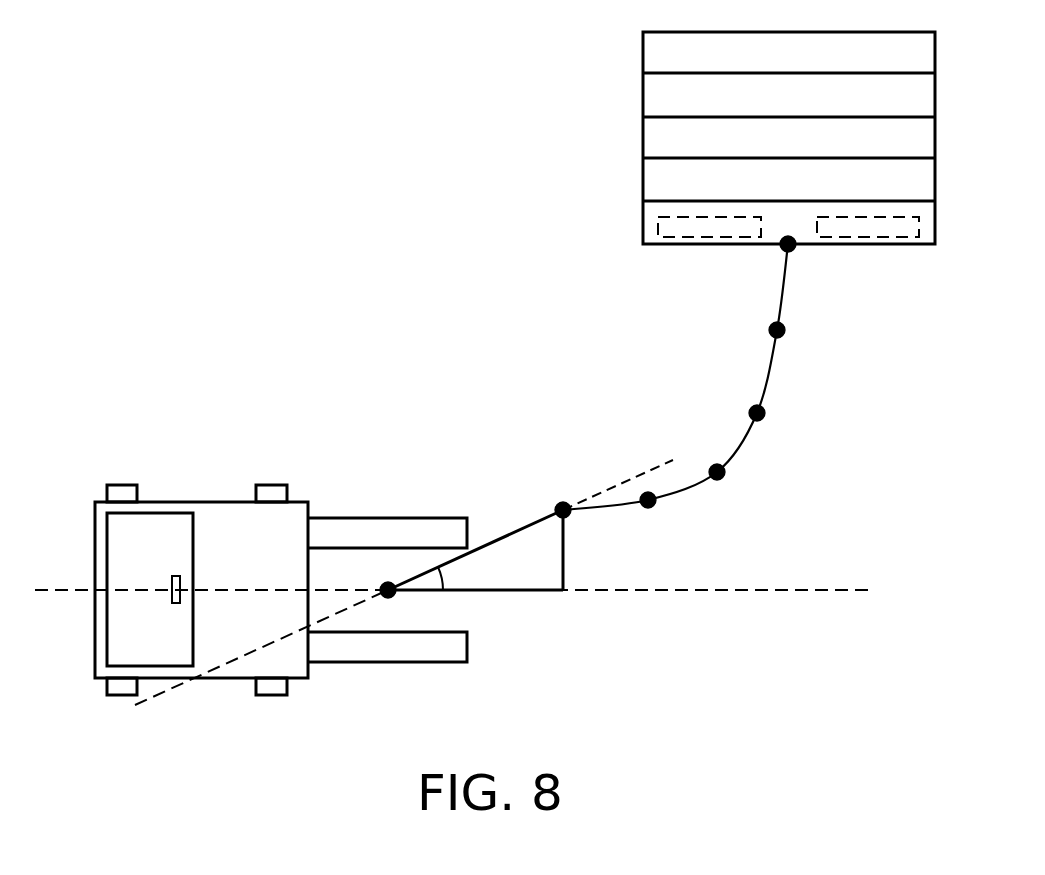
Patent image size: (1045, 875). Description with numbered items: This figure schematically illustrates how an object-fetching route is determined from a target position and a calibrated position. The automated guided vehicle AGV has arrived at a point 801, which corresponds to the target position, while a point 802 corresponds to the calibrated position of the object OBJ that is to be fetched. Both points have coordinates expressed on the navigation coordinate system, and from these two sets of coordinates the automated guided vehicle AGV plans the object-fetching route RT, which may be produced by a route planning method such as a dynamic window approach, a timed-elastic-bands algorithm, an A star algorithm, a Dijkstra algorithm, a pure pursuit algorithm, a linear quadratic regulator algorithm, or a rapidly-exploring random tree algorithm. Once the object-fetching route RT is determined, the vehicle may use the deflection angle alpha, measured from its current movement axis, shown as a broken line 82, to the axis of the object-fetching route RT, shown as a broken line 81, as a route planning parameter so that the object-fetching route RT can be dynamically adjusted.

The object OBJ is at (650, 139).
The automated guided vehicle AGV is at (220, 515).
The object-fetching route RT is at (745, 440).
The point 801 is at (396, 598).
The point 802 is at (794, 252).
The broken line 81 is at (605, 490).
The broken line 82 is at (795, 592).